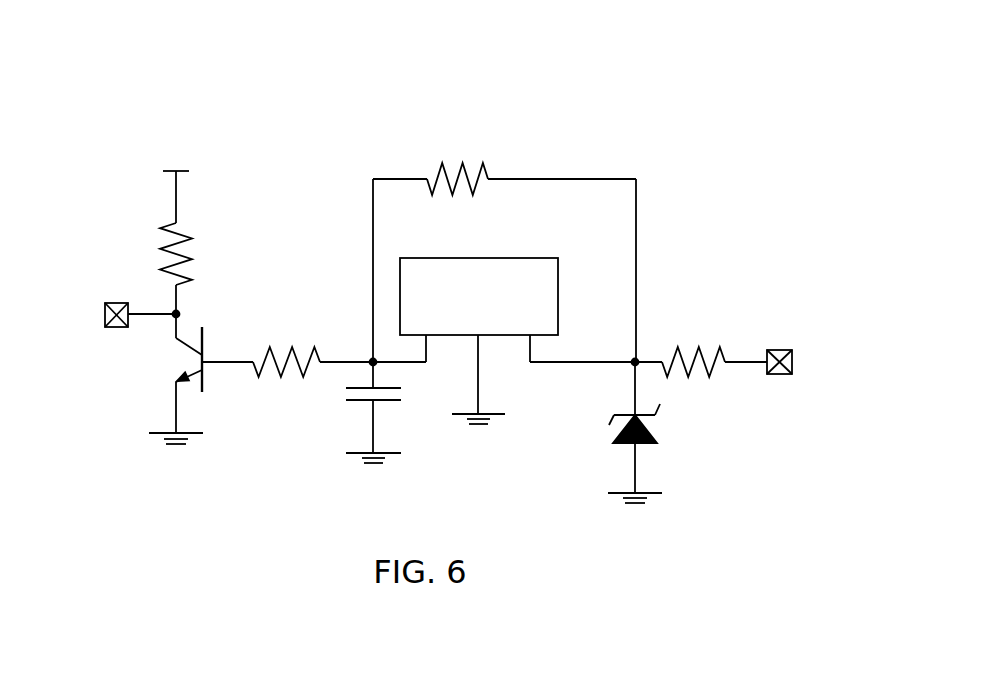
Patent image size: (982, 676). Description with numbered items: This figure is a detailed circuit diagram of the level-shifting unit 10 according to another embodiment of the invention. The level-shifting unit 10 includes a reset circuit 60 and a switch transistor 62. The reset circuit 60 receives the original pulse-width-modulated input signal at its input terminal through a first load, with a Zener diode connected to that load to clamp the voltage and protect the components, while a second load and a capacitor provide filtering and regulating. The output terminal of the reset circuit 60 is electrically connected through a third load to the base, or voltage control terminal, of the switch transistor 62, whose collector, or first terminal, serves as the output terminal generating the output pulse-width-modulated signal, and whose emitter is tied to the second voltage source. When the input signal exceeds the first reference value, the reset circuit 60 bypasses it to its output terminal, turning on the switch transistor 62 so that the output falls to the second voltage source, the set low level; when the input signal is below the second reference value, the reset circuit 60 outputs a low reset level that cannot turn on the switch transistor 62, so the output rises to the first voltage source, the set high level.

The level-shifting unit 10 is at (207, 46).
The reset circuit 60 is at (558, 283).
The switch transistor 62 is at (217, 330).